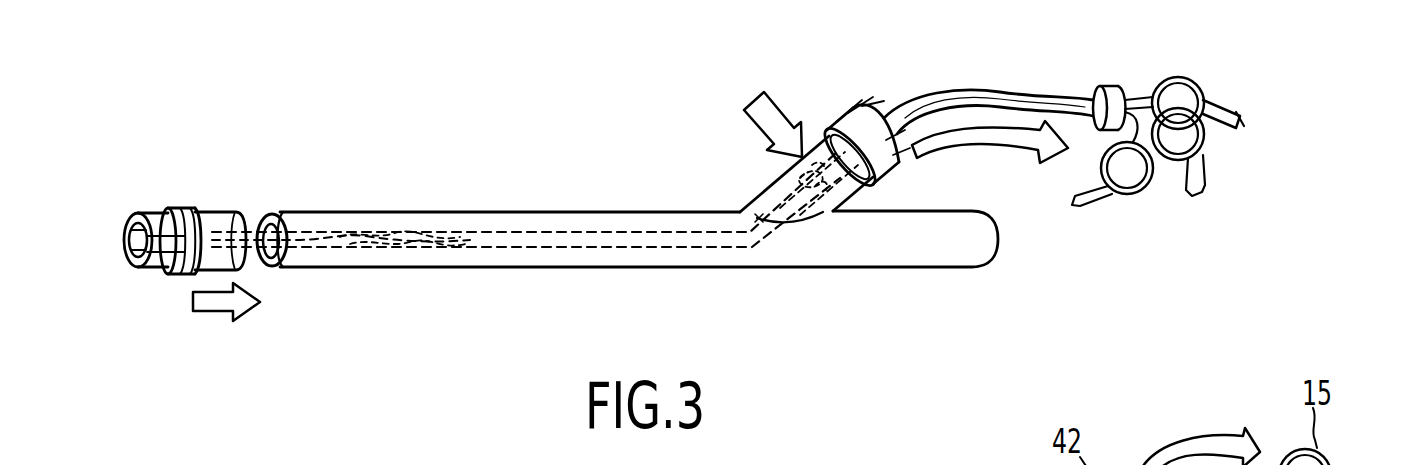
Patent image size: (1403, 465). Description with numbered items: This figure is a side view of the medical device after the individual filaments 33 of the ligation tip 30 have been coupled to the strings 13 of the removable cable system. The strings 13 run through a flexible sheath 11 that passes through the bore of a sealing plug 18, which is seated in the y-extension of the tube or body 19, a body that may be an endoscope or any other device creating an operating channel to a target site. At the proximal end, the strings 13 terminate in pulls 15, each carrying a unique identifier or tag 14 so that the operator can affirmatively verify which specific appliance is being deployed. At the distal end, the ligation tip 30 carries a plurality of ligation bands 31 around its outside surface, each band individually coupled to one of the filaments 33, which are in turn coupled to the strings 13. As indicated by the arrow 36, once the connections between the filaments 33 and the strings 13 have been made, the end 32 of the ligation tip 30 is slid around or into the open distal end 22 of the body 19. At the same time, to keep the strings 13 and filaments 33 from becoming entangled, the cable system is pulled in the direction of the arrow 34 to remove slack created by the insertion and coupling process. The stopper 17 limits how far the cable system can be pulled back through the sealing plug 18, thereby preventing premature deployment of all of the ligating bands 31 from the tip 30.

The flexible sheath 11 is at (525, 248).
The strings 13 is at (1148, 108).
The tags 14 is at (1247, 127).
The pulls 15 is at (1203, 143).
The stopper 17 is at (795, 176).
The sealing plug 18 is at (855, 105).
The body 19 is at (578, 268).
The distal end 22 is at (283, 212).
The ligation tip 30 is at (153, 217).
The ligation bands 31 is at (200, 220).
The end 32 is at (233, 180).
The filaments 33 is at (270, 215).
The arrow 34 is at (998, 144).
The arrow 36 is at (247, 300).